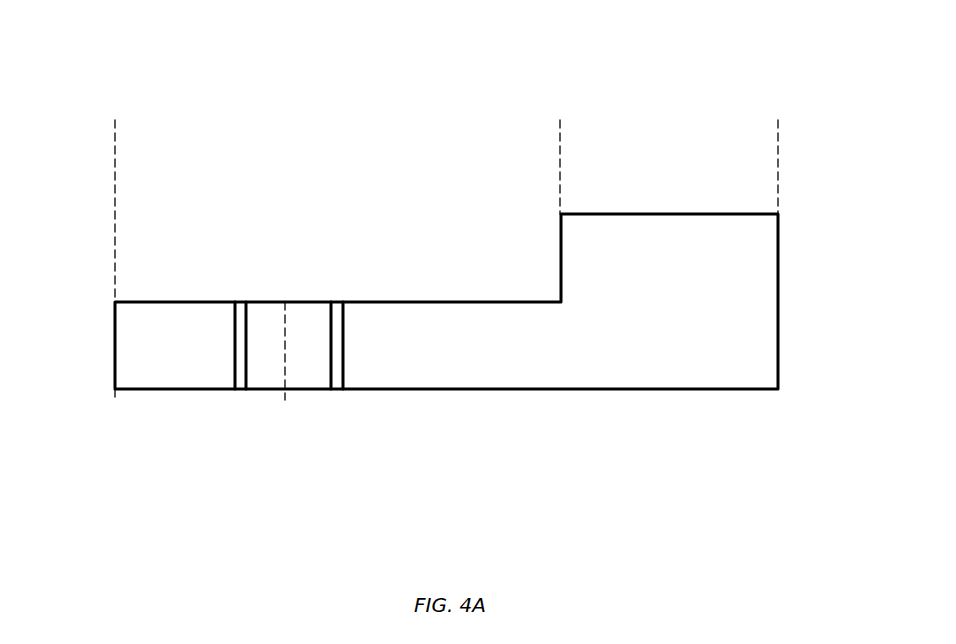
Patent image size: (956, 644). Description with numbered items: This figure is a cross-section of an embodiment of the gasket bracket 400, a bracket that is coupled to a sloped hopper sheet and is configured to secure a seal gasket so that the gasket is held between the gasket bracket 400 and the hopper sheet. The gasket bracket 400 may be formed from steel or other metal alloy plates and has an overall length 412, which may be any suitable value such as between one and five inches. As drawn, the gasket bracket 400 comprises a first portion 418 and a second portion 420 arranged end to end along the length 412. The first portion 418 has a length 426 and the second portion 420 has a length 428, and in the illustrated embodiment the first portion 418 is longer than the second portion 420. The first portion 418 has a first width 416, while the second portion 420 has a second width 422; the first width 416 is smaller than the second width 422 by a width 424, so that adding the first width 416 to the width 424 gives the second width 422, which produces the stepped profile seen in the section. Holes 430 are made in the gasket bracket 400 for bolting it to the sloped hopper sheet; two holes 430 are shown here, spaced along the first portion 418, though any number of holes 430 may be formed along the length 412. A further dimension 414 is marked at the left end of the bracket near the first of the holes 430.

The gasket bracket 400 is at (113, 15).
The length 412 is at (115, 445).
The first region 414 is at (115, 398).
The first width 416 is at (107, 302).
The first portion 418 is at (560, 118).
The second portion 420 is at (561, 120).
The second width 422 is at (785, 214).
The width 424 is at (553, 214).
The length 426 is at (560, 167).
The length 428 is at (561, 167).
The holes 430 is at (250, 351).